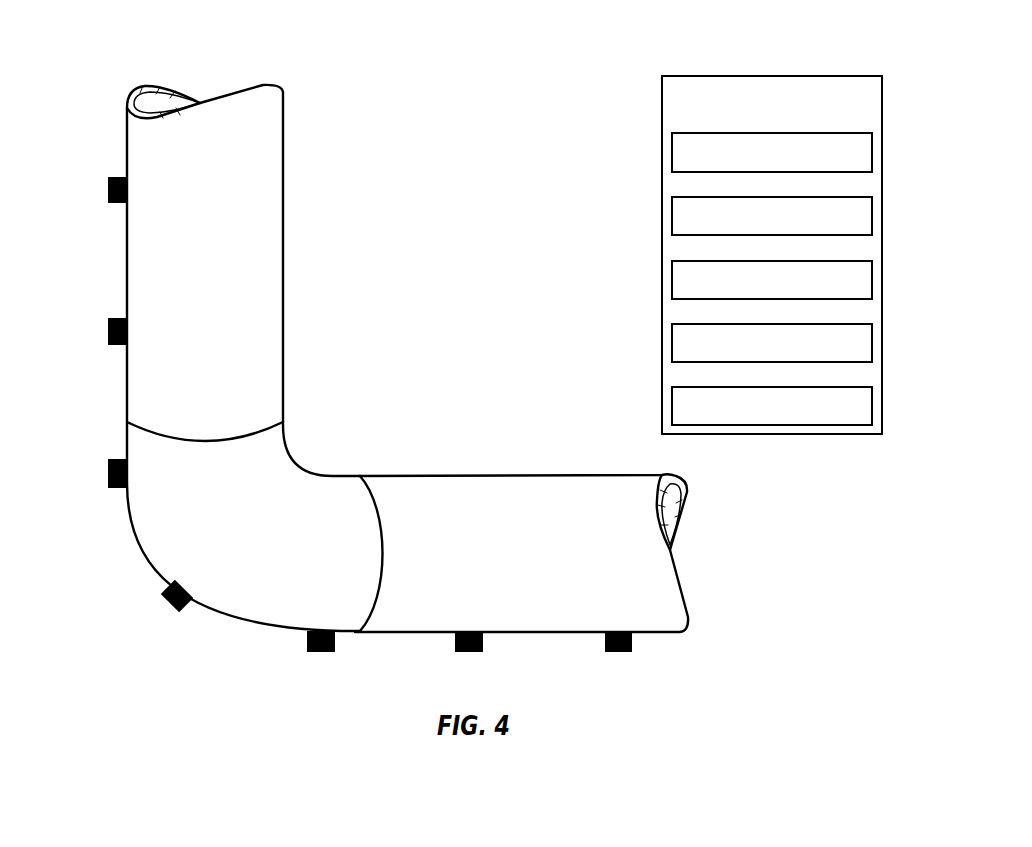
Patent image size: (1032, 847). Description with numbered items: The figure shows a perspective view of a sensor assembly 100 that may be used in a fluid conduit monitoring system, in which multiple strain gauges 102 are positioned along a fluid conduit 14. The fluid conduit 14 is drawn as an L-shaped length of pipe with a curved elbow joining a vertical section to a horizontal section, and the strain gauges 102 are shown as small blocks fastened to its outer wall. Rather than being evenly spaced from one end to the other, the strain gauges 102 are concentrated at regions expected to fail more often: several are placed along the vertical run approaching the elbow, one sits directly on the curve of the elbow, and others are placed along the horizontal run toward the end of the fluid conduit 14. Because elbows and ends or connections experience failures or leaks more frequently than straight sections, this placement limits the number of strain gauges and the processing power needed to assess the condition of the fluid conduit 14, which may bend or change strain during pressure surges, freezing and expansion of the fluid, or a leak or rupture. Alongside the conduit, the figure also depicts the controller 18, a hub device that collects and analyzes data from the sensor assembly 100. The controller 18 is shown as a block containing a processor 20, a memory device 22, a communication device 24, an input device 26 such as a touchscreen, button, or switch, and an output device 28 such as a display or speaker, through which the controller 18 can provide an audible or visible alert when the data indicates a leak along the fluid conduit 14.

The sensor assembly 100 is at (416, 53).
The fluid conduit 14 is at (283, 253).
The strain gauges 102 is at (346, 421).
The controller 18 is at (772, 76).
The processor 20 is at (772, 133).
The memory device 22 is at (772, 197).
The communication device 24 is at (772, 261).
The input device 26 is at (772, 324).
The output device 28 is at (772, 387).